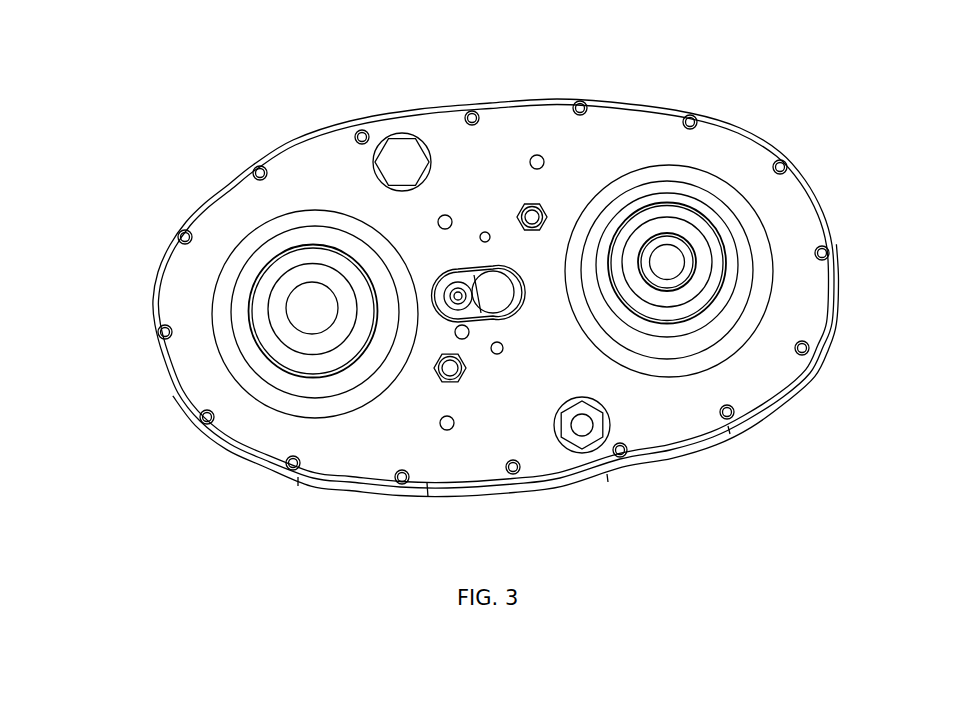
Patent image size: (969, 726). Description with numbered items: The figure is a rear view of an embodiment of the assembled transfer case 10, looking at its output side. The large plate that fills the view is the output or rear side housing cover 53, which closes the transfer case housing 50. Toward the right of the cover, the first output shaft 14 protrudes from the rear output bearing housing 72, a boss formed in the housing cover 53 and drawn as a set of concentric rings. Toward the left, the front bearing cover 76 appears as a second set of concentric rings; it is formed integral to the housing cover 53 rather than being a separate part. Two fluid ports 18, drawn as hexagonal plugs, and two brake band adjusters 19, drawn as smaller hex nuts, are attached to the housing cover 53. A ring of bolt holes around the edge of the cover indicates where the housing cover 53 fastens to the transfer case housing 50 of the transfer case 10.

The transfer case 10 is at (106, 147).
The first output shaft 14 is at (667, 250).
The fluid ports 18 is at (400, 147).
The brake band adjusters 19 is at (532, 203).
The transfer case housing 50 is at (806, 173).
The housing cover 53 is at (788, 223).
The rear output bearing housing 72 is at (743, 279).
The front bearing cover 76 is at (240, 325).